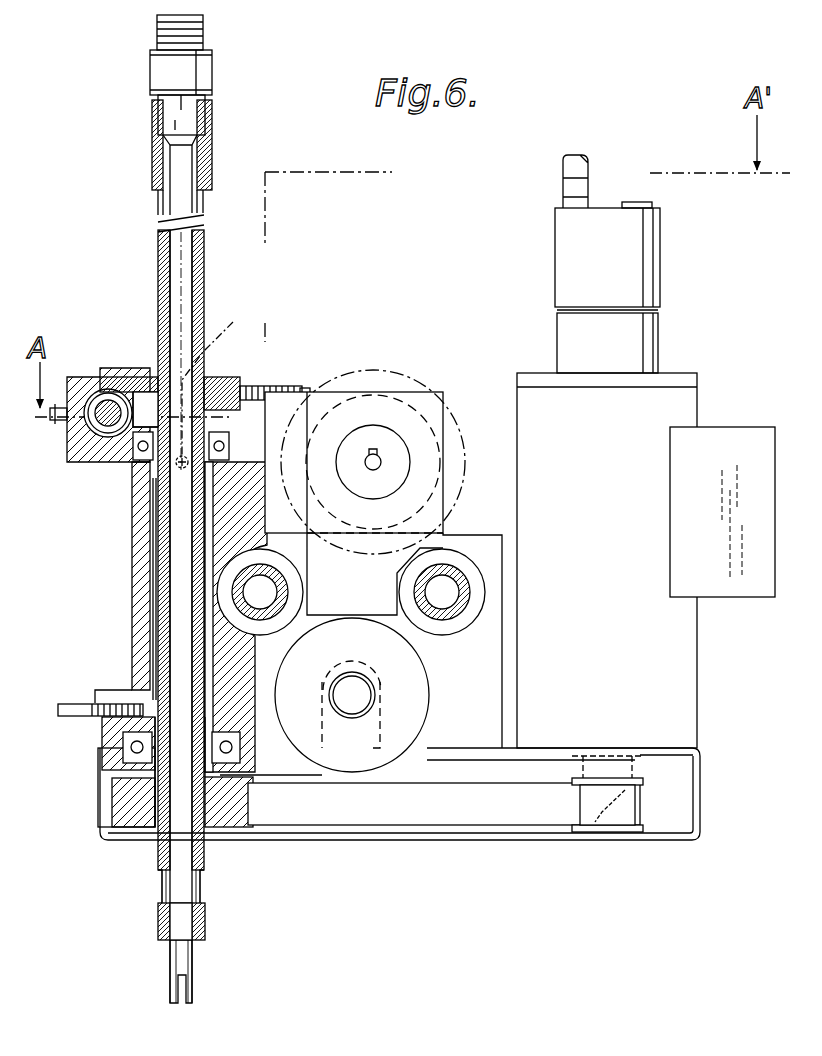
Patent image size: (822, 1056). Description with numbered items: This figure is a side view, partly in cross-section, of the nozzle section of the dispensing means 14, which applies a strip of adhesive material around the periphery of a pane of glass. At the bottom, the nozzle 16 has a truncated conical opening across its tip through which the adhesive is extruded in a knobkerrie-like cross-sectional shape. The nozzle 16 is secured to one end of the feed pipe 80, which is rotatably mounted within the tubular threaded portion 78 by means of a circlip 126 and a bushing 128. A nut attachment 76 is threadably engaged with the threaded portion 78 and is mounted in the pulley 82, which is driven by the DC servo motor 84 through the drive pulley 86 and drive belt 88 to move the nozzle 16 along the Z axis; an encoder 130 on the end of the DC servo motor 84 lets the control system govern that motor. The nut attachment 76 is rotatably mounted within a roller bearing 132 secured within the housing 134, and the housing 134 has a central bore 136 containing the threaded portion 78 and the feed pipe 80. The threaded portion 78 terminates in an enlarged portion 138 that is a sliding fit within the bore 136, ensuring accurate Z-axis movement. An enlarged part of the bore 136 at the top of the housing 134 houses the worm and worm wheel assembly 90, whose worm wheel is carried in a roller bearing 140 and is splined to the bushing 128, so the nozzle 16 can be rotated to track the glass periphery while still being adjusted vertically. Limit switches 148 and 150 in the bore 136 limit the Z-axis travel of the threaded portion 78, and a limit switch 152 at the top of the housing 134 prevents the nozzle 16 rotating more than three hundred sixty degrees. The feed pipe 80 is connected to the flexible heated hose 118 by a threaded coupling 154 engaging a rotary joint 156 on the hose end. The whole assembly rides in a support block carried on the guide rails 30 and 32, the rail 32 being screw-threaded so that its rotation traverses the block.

The dispensing means 14 is at (447, 242).
The nozzle 16 is at (205, 938).
The guide rail 30 is at (455, 598).
The guide rail 32 is at (360, 695).
The nut attachment 76 is at (118, 827).
The tubular threaded portion 78 is at (158, 842).
The feed pipe 80 is at (160, 245).
The pulley 82 is at (137, 820).
The DC servo motor 84 is at (700, 393).
The drive pulley 86 is at (604, 812).
The drive belt 88 is at (352, 812).
The worm and worm wheel assembly 90 is at (126, 390).
The flexible heated hose 118 is at (205, 33).
The circlip 126 is at (162, 867).
The bushing 128 is at (150, 471).
The encoder 130 is at (645, 272).
The roller bearing 132 is at (122, 762).
The housing 134 is at (138, 597).
The central bore 136 is at (150, 632).
The enlarged portion 138 is at (147, 500).
The roller bearing 140 is at (97, 463).
The limit switch 148 is at (115, 728).
The limit switch 150 is at (229, 376).
The limit switch 152 is at (290, 365).
The threaded coupling 154 is at (152, 137).
The rotary joint 156 is at (157, 65).